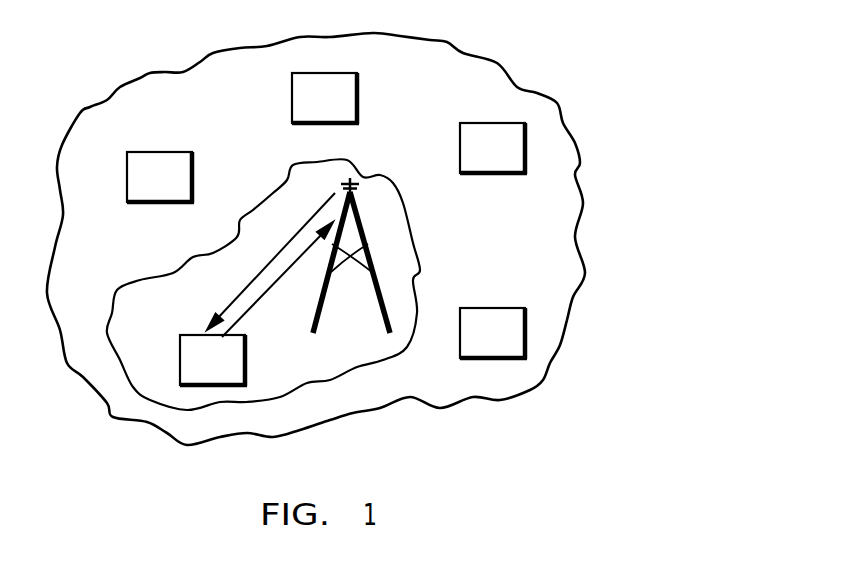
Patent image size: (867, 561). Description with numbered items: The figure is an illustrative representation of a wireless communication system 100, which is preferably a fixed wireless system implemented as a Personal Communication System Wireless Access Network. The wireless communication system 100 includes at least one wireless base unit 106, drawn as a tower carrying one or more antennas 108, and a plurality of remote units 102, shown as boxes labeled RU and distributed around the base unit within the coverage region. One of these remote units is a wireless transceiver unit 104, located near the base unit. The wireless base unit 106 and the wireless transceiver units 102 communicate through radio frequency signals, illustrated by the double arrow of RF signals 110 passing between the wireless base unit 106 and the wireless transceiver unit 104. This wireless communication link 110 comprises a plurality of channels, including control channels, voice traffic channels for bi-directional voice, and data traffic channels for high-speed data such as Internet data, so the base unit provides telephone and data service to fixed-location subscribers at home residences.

The wireless communication system 100 is at (490, 463).
The remote units 102 is at (316, 238).
The wireless transceiver unit 104 is at (179, 363).
The wireless base unit 106 is at (395, 232).
The antennas 108 is at (357, 183).
The RF signals 110 is at (257, 273).